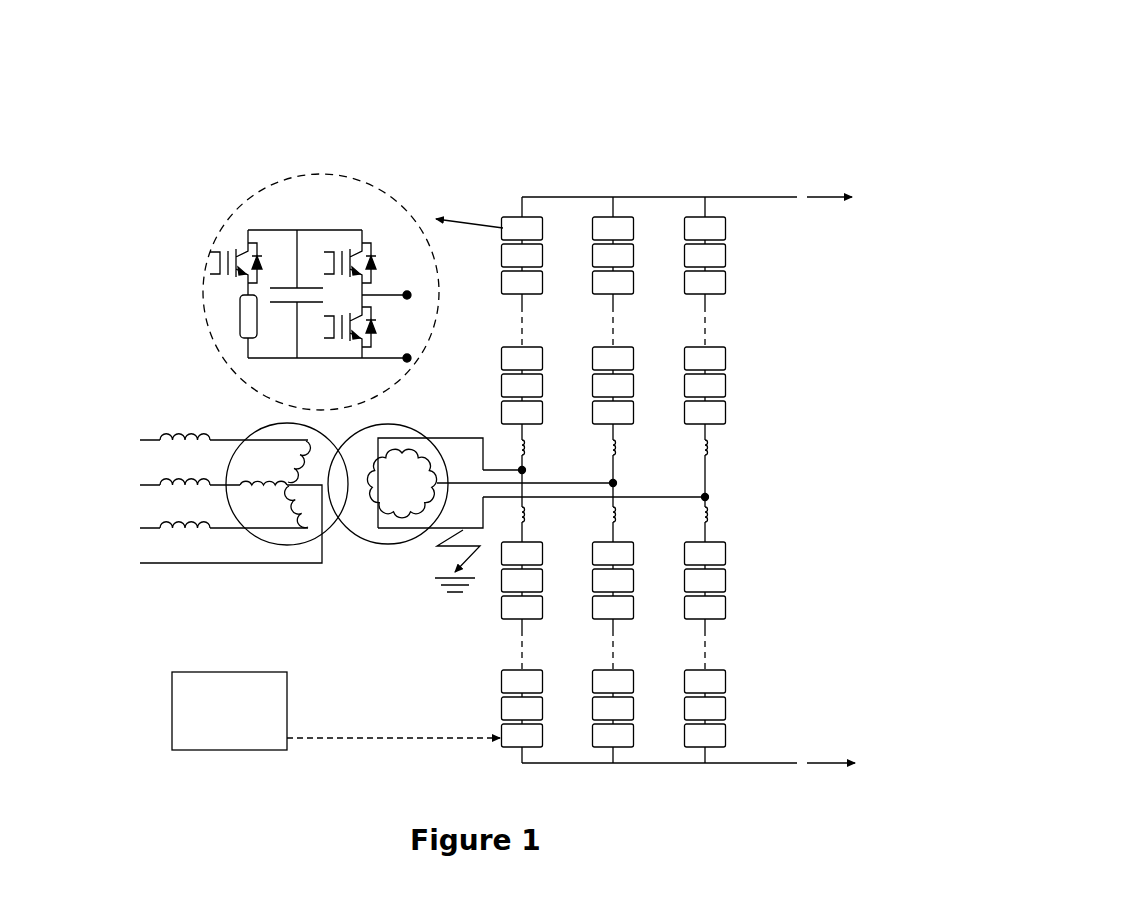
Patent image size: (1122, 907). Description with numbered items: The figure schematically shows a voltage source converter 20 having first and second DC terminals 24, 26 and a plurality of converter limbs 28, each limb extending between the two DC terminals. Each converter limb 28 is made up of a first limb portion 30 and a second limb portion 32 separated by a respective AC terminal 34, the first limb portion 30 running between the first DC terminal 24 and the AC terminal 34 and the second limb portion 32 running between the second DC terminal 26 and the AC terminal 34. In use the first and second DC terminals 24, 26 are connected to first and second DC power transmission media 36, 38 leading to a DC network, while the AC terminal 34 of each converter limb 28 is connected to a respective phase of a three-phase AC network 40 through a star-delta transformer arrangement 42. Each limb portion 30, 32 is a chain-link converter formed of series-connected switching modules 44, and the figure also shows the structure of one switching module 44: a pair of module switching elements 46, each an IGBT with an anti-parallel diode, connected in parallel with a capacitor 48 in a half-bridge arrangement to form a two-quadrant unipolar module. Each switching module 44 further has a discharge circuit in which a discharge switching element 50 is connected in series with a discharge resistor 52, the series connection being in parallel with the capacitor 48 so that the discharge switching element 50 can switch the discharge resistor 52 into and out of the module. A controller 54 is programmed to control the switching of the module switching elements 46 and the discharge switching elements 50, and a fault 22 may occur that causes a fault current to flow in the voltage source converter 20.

The voltage source converter 20 is at (781, 128).
The fault 22 is at (443, 612).
The first DC terminal 24 is at (710, 205).
The second DC terminal 26 is at (712, 758).
The converter limb 28 is at (705, 170).
The first limb portion 30 is at (758, 337).
The second limb portion 32 is at (748, 611).
The AC terminal 34 is at (707, 496).
The first DC power transmission medium 36 is at (847, 197).
The second DC power transmission medium 38 is at (853, 763).
The three-phase AC network 40 is at (90, 528).
The star-delta transformer arrangement 42 is at (337, 533).
The switching module 44 is at (281, 215).
The module switching element 46 is at (352, 346).
The capacitor 48 is at (290, 304).
The discharge switching element 50 is at (216, 263).
The discharge resistor 52 is at (236, 320).
The controller 54 is at (210, 724).